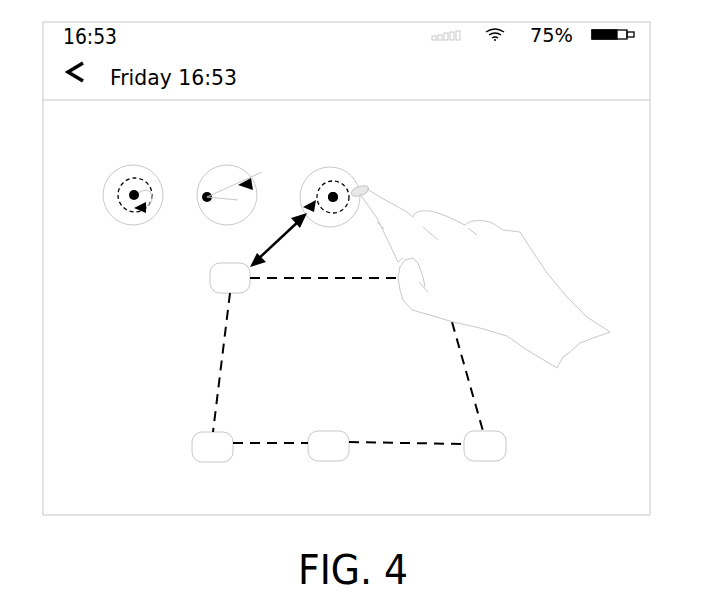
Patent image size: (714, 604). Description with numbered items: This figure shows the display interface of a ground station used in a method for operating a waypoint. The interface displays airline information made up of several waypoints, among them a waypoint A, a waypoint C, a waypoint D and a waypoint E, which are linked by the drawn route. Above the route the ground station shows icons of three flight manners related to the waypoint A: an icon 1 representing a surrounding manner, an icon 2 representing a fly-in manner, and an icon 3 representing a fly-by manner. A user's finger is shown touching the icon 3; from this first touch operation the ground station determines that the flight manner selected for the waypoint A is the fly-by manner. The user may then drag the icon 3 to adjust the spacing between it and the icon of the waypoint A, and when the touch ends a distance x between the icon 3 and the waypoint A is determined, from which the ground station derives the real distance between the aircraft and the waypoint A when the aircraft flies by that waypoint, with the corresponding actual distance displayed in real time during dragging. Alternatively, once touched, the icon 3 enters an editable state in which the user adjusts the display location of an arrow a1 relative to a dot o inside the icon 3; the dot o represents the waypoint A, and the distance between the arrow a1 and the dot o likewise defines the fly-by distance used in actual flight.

The icon 1 is at (133, 211).
The icon 2 is at (229, 211).
The icon 3 is at (330, 212).
The arrow a1 is at (318, 172).
The dot o is at (333, 194).
The distance x is at (278, 244).
The waypoint A is at (224, 290).
The waypoint C is at (212, 465).
The waypoint D is at (328, 464).
The waypoint E is at (485, 464).